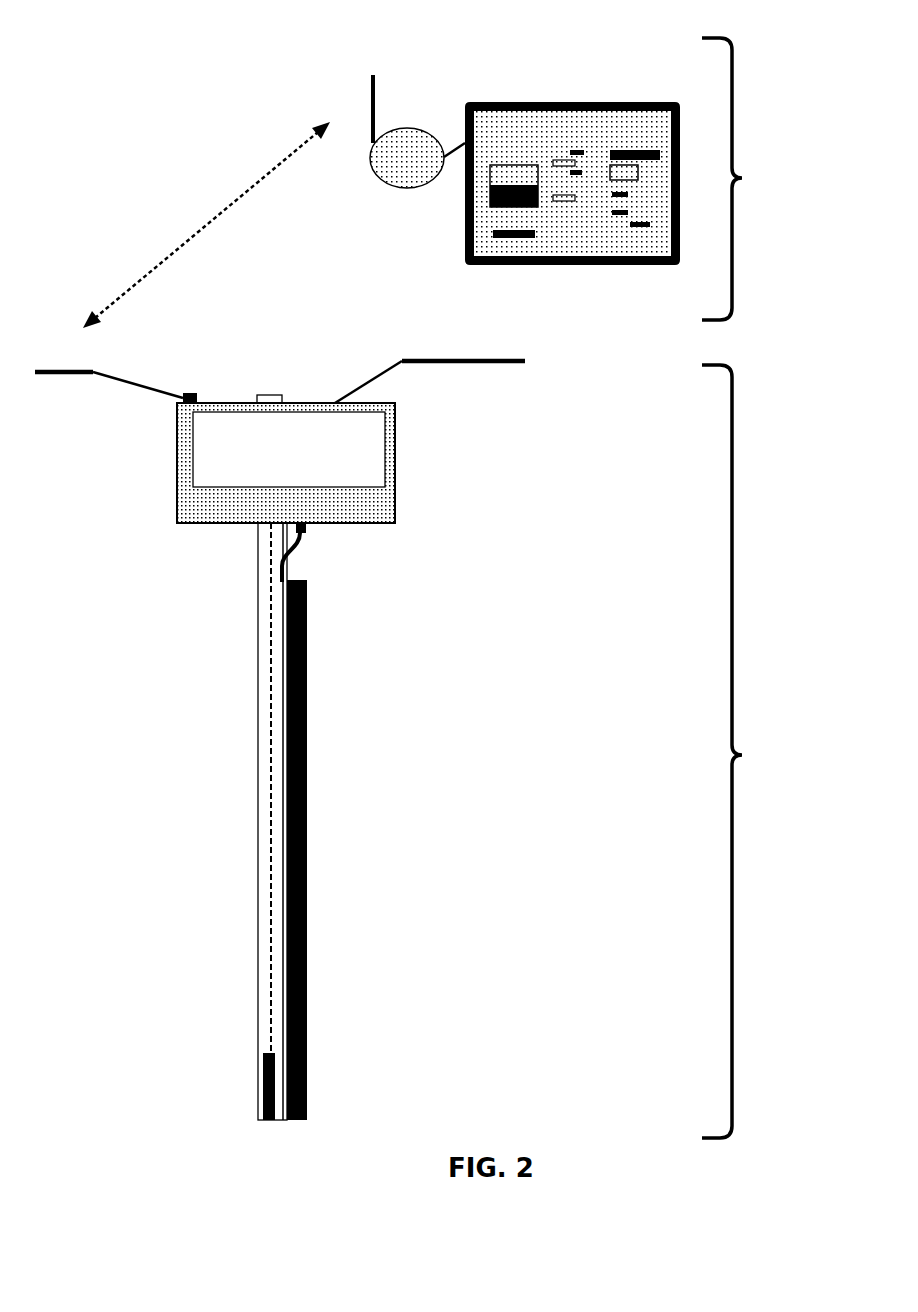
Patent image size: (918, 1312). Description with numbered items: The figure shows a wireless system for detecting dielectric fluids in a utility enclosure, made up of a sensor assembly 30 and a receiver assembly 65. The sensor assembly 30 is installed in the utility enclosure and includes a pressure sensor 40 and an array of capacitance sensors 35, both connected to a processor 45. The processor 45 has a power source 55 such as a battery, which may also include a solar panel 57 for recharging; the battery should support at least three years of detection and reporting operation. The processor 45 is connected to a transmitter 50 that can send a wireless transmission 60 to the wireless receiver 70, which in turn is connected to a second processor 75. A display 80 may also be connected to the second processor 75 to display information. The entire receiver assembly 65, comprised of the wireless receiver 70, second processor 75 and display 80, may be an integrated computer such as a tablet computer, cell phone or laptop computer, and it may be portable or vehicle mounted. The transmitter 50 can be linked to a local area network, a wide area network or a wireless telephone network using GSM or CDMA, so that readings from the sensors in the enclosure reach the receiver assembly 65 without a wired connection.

The sensor assembly 30 is at (742, 755).
The array of capacitance sensors 35 is at (303, 827).
The pressure sensor 40 is at (263, 1080).
The processor 45 is at (348, 459).
The power source 55 is at (385, 454).
The transmitter 50 is at (77, 365).
The solar panel 57 is at (508, 367).
The wireless transmission 60 is at (213, 218).
The receiver assembly 65 is at (742, 178).
The wireless receiver 70 is at (375, 78).
The second processor 75 is at (572, 150).
The display 80 is at (578, 102).